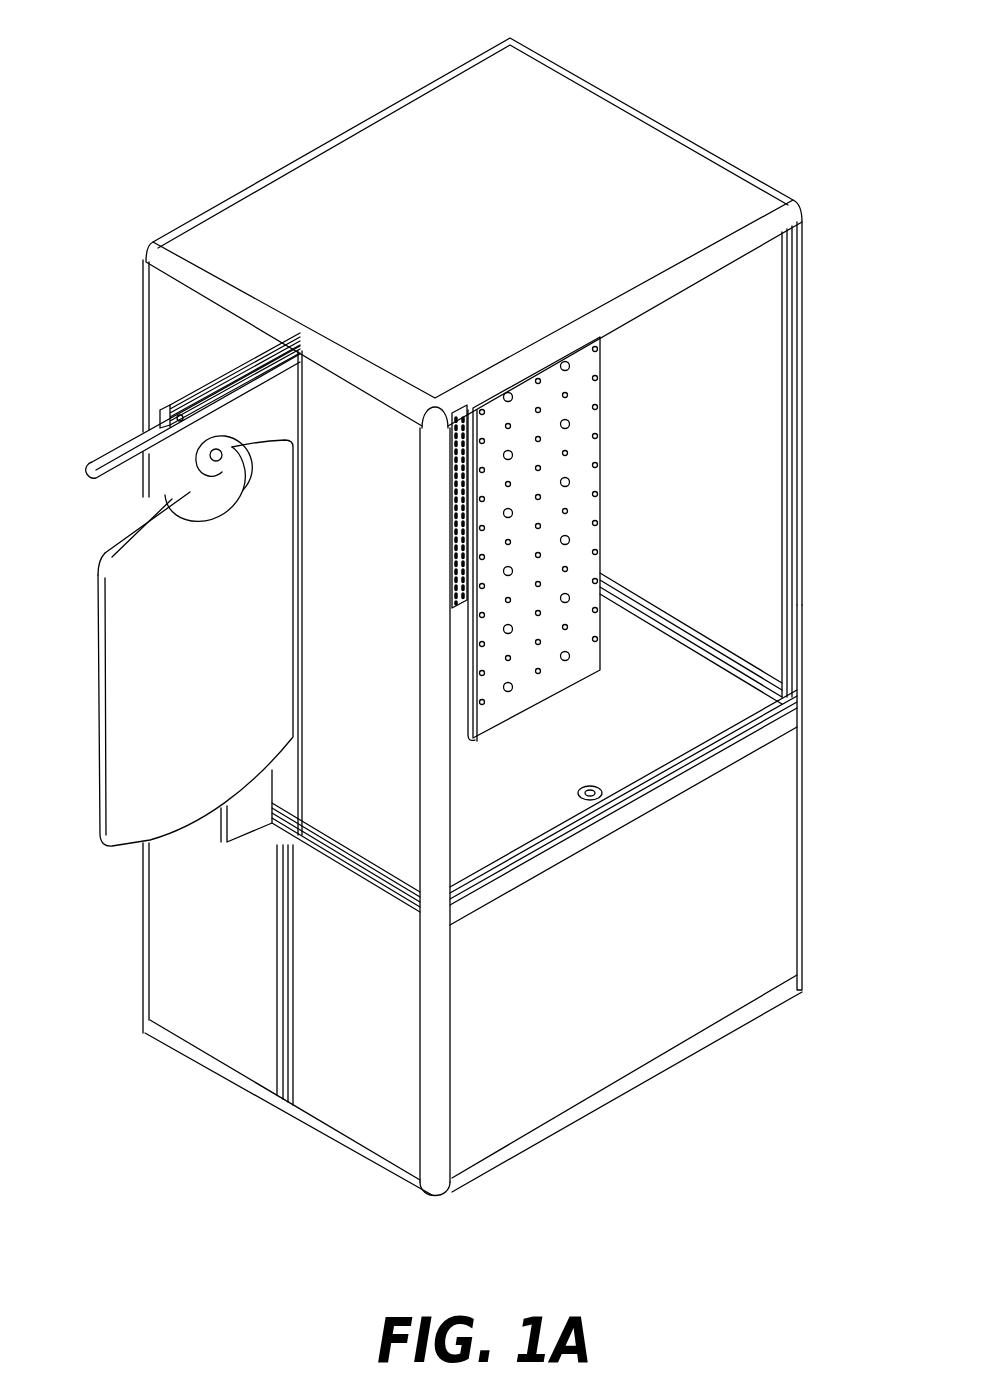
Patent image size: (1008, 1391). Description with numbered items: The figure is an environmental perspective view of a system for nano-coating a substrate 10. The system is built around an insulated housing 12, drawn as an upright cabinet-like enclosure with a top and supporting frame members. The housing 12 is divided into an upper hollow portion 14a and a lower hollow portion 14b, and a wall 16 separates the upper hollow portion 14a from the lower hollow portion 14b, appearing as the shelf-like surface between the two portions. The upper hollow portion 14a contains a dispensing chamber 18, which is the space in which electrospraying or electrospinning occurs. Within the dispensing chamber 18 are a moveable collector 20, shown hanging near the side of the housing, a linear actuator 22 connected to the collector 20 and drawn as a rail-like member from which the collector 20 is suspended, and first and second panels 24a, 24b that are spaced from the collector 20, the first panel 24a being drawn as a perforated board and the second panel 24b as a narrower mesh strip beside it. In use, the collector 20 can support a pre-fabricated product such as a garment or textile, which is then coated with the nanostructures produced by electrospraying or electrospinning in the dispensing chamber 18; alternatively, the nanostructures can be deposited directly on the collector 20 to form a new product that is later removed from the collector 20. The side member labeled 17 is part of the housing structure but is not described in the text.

The system for nano-coating a substrate 10 is at (116, 92).
The insulated housing 12 is at (313, 144).
The upper hollow portion 14a is at (800, 563).
The lower hollow portion 14b is at (780, 867).
The wall 16 is at (717, 697).
The side panel 17 is at (190, 332).
The dispensing chamber 18 is at (770, 332).
The collector 20 is at (113, 757).
The linear actuator 22 is at (126, 452).
The first panel 24a is at (605, 452).
The second panel 24b is at (449, 607).